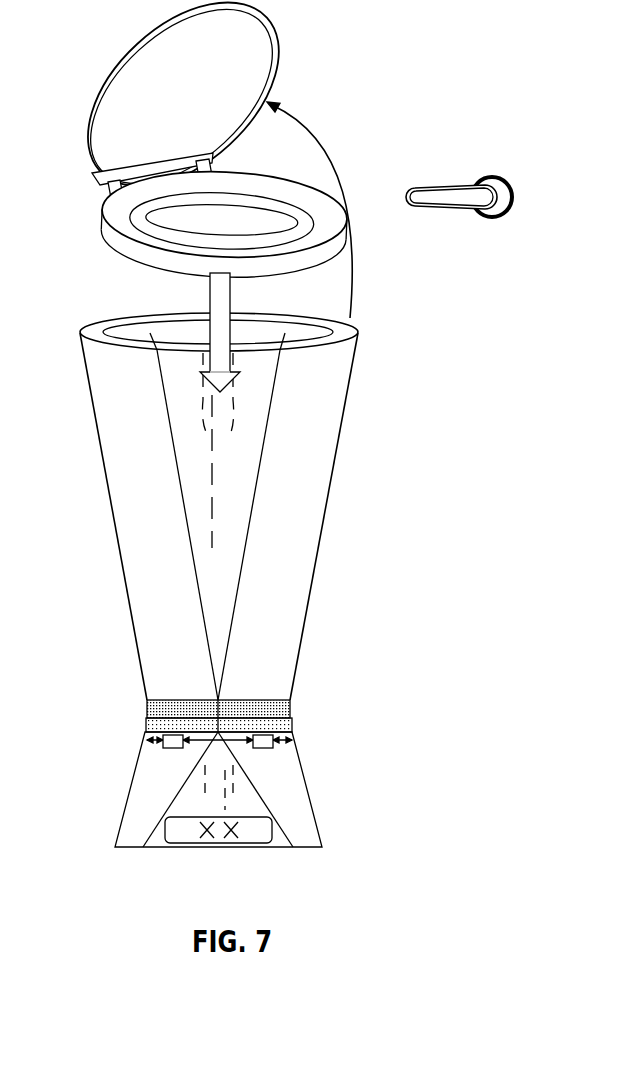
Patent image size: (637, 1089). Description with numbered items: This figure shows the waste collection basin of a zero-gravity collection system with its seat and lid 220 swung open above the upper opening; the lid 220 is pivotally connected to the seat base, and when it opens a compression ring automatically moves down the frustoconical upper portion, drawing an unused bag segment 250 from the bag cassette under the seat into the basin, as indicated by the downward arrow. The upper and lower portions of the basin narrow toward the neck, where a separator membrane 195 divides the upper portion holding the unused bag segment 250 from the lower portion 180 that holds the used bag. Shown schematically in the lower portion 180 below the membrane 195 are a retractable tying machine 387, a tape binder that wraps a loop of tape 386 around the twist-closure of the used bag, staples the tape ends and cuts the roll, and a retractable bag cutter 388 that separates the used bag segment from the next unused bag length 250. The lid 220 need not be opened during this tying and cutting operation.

The lid 220 is at (136, 76).
The unused bag segment 250 is at (242, 460).
The separator membrane 195 is at (290, 725).
The retractable tying machine 387 is at (173, 740).
The retractable bag cutter 388 is at (275, 748).
The lower portion 180 is at (320, 837).
The loop of tape 386 is at (168, 823).